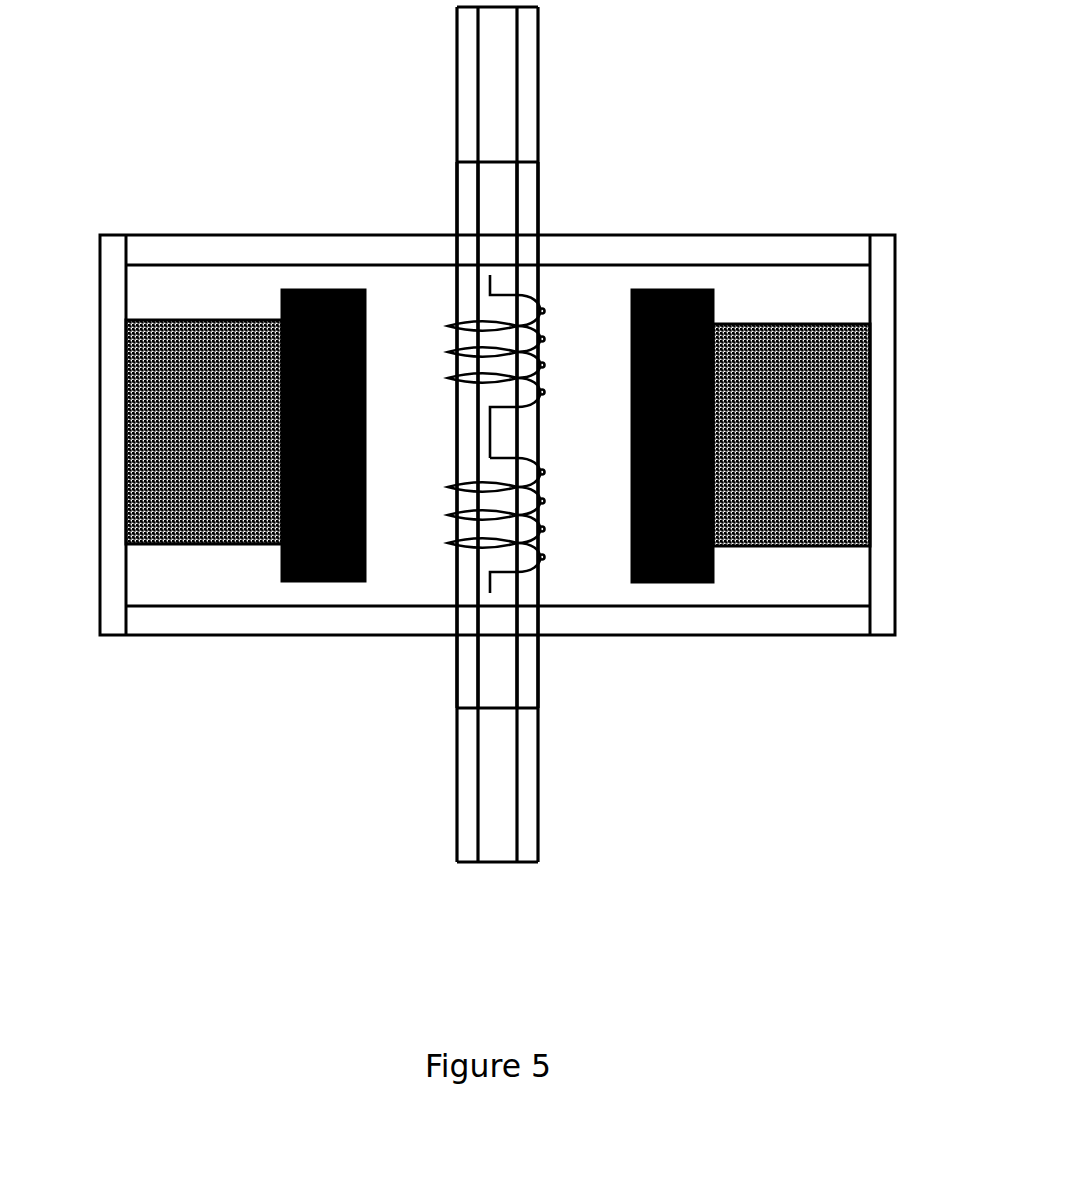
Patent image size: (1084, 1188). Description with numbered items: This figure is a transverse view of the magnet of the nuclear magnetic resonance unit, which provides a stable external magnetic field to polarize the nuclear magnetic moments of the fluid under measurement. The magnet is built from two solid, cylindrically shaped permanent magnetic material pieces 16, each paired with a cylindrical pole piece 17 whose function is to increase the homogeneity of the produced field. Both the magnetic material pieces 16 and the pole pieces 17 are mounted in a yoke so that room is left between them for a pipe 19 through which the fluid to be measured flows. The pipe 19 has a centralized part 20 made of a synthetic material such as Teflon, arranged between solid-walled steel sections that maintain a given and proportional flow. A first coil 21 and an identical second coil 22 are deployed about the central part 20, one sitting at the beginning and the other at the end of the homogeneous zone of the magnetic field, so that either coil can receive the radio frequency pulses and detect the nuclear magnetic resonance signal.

The permanent magnetic material pieces 16 is at (770, 708).
The pole pieces 17 is at (598, 586).
The pipe 19 is at (555, 65).
The centralized part 20 is at (555, 192).
The first coil 21 is at (424, 308).
The second coil 22 is at (440, 455).